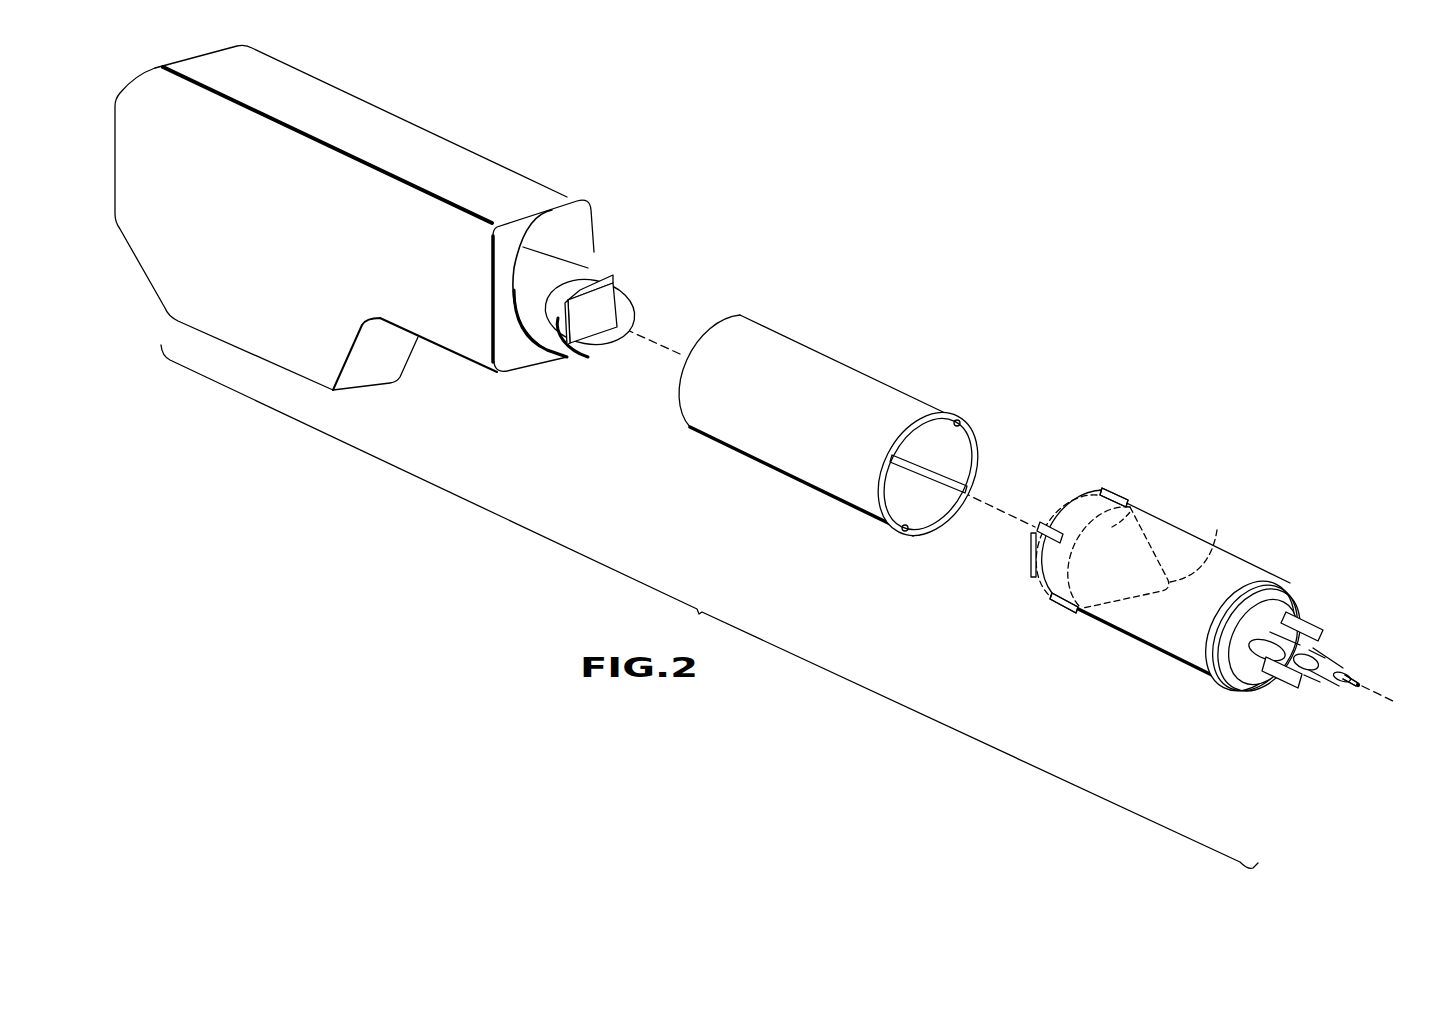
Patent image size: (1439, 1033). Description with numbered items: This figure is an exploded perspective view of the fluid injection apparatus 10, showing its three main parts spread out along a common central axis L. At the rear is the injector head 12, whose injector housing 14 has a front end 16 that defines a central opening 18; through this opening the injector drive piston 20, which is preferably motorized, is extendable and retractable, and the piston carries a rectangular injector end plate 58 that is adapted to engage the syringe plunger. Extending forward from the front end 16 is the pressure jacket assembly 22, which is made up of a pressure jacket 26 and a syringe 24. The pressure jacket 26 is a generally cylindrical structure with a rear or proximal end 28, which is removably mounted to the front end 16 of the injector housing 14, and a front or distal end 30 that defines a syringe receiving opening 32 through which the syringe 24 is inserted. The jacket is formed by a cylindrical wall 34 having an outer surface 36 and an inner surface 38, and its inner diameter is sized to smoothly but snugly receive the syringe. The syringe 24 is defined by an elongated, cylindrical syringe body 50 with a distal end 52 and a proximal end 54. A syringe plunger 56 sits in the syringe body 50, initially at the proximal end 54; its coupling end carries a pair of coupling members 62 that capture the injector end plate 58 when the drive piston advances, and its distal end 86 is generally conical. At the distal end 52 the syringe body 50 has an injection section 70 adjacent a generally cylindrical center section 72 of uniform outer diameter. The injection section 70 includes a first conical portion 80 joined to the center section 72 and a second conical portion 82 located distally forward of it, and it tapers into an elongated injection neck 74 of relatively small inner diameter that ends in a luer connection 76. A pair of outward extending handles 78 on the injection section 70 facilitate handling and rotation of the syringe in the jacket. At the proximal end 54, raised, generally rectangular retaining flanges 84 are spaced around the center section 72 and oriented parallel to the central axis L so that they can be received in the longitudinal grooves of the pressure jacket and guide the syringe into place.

The fluid injection apparatus 10 is at (776, 242).
The injector head 12 is at (354, 237).
The injector housing 14 is at (462, 142).
The front end 16 is at (507, 372).
The central opening 18 is at (560, 232).
The injector drive piston 20 is at (585, 246).
The pressure jacket assembly 22 is at (835, 445).
The syringe 24 is at (1210, 622).
The pressure jacket 26 is at (782, 343).
The proximal end 28 is at (672, 420).
The distal end 30 is at (914, 474).
The syringe receiving opening 32 is at (943, 446).
The cylindrical wall 34 is at (907, 535).
The outer surface 36 is at (801, 461).
The inner surface 38 is at (935, 512).
The syringe body 50 is at (1157, 648).
The distal end 52 is at (1360, 712).
The proximal end 54 is at (1063, 627).
The syringe plunger 56 is at (1132, 510).
The injector end plate 58 is at (586, 331).
The coupling members 62 is at (1027, 557).
The injection section 70 is at (1341, 672).
The center section 72 is at (1183, 682).
The injection neck 74 is at (1298, 650).
The luer connection 76 is at (1358, 684).
The handles 78 is at (1305, 614).
The first conical portion 80 is at (1297, 680).
The second conical portion 82 is at (1332, 657).
The retaining flanges 84 is at (1058, 512).
The distal end of syringe plunger 86 is at (1212, 541).
The central axis L is at (637, 333).